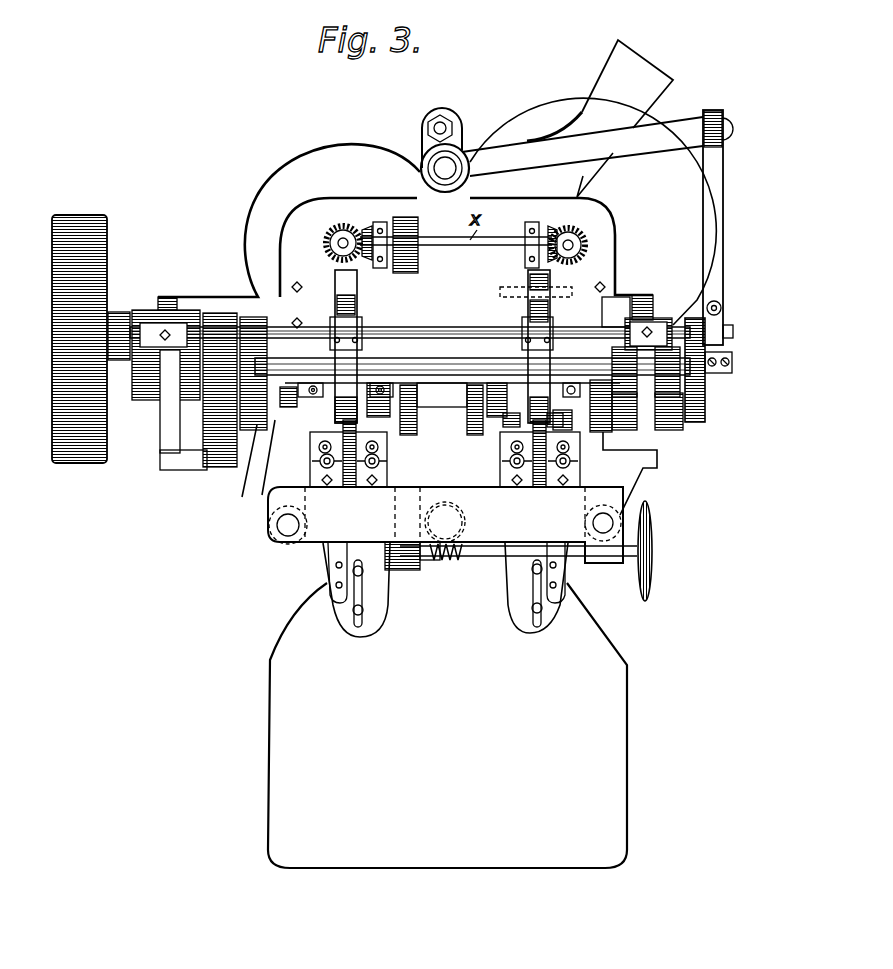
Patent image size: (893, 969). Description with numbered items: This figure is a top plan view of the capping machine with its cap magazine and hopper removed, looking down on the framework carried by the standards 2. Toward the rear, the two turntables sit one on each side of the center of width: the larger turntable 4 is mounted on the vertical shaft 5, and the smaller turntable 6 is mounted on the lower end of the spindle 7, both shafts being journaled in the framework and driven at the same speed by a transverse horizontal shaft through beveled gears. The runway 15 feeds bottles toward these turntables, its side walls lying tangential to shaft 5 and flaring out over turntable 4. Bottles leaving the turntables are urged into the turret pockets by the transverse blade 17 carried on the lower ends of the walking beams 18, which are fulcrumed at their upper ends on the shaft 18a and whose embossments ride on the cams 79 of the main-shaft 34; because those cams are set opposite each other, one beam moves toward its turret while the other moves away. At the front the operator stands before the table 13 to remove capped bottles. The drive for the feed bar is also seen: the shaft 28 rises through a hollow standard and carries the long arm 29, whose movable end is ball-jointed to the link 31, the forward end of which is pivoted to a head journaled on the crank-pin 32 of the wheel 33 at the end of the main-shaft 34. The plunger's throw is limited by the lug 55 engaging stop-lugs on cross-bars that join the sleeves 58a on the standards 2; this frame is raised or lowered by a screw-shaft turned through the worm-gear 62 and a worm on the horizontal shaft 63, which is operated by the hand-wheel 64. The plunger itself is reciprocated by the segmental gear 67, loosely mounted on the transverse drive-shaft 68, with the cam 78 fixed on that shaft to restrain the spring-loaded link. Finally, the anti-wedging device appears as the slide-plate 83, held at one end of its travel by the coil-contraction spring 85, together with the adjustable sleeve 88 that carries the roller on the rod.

The standards 2 is at (287, 527).
The turntable 4 is at (593, 211).
The shaft 5 is at (573, 246).
The turntable 6 is at (318, 150).
The spindle 7 is at (336, 240).
The table 13 is at (447, 725).
The runway 15 is at (618, 42).
The transverse blade 17 is at (518, 292).
The walking beams 18 is at (357, 302).
The shaft 18a is at (444, 337).
The shaft 28 is at (430, 155).
The arm 29 is at (570, 143).
The link 31 is at (725, 238).
The crank-pin 32 is at (733, 330).
The wheel 33 is at (705, 387).
The main-shaft 34 is at (413, 360).
The lug 55 is at (340, 483).
The sleeves 58a is at (275, 522).
The worm-gear 62 is at (465, 518).
The horizontal shaft 63 is at (490, 553).
The hand-wheel 64 is at (653, 567).
The segmental gear 67 is at (503, 427).
The drive-shaft 68 is at (272, 422).
The cam 78 is at (483, 420).
The cams 79 is at (323, 366).
The slide-plate 83 is at (317, 443).
The coil-contraction spring 85 is at (378, 436).
The sleeve 88 is at (317, 463).